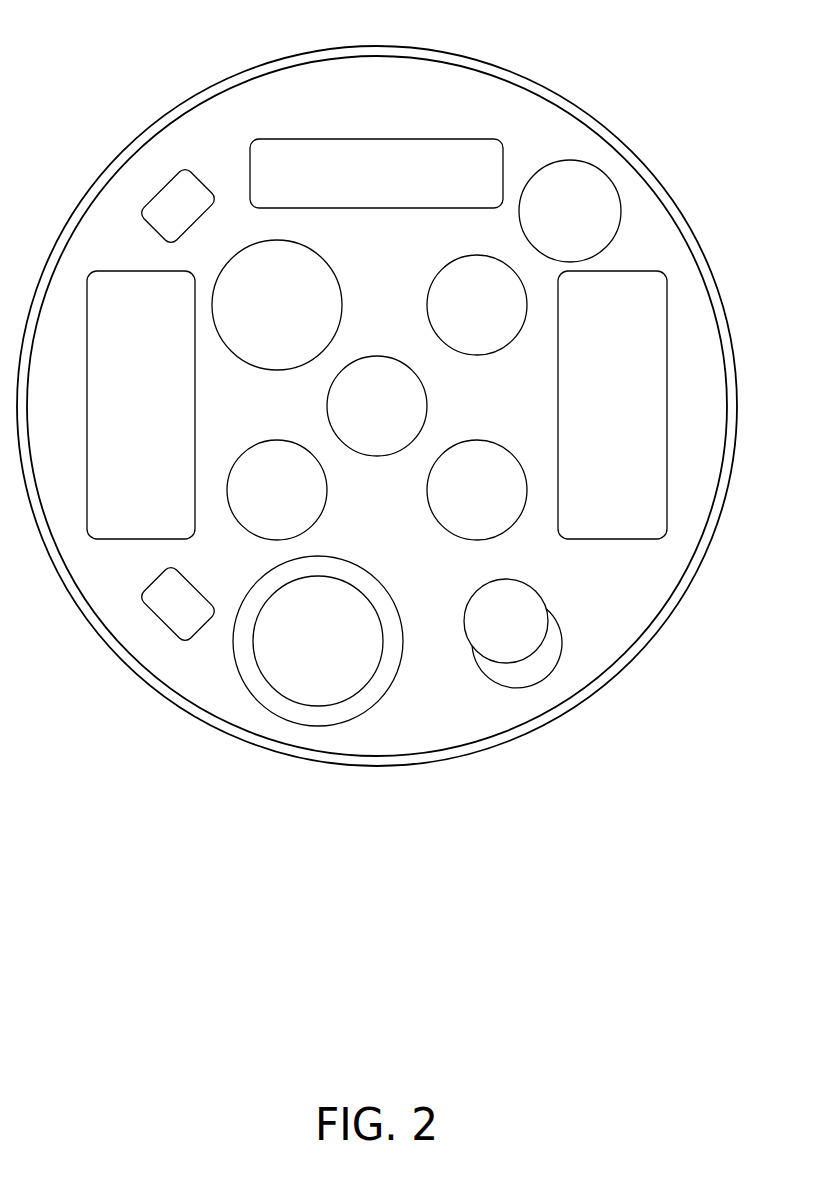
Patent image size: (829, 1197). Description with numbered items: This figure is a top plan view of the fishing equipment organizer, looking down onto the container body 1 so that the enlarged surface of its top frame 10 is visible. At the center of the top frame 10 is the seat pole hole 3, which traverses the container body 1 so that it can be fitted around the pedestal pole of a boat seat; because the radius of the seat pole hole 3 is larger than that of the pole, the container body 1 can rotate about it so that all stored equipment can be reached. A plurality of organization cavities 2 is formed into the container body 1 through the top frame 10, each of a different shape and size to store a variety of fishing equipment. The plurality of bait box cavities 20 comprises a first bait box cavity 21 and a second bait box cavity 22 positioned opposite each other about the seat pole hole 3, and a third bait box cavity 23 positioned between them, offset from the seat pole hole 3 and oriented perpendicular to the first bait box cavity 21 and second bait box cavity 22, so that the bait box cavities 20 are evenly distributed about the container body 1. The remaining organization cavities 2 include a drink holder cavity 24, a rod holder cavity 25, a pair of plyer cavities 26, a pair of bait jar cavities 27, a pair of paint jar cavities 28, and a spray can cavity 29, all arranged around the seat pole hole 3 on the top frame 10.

The container body 1 is at (302, 766).
The organization cavities 2 is at (662, 30).
The seat pole hole 3 is at (368, 372).
The top frame 10 is at (735, 447).
The bait box cavities 20 is at (377, 335).
The first bait box cavity 21 is at (87, 298).
The second bait box cavity 22 is at (667, 528).
The third bait box cavity 23 is at (318, 139).
The drink holder cavity 24 is at (362, 582).
The rod holder cavity 25 is at (513, 597).
The plyer cavities 26 is at (172, 205).
The bait jar cavities 27 is at (579, 185).
The paint jar cavities 28 is at (292, 460).
The spray can cavity 29 is at (298, 262).